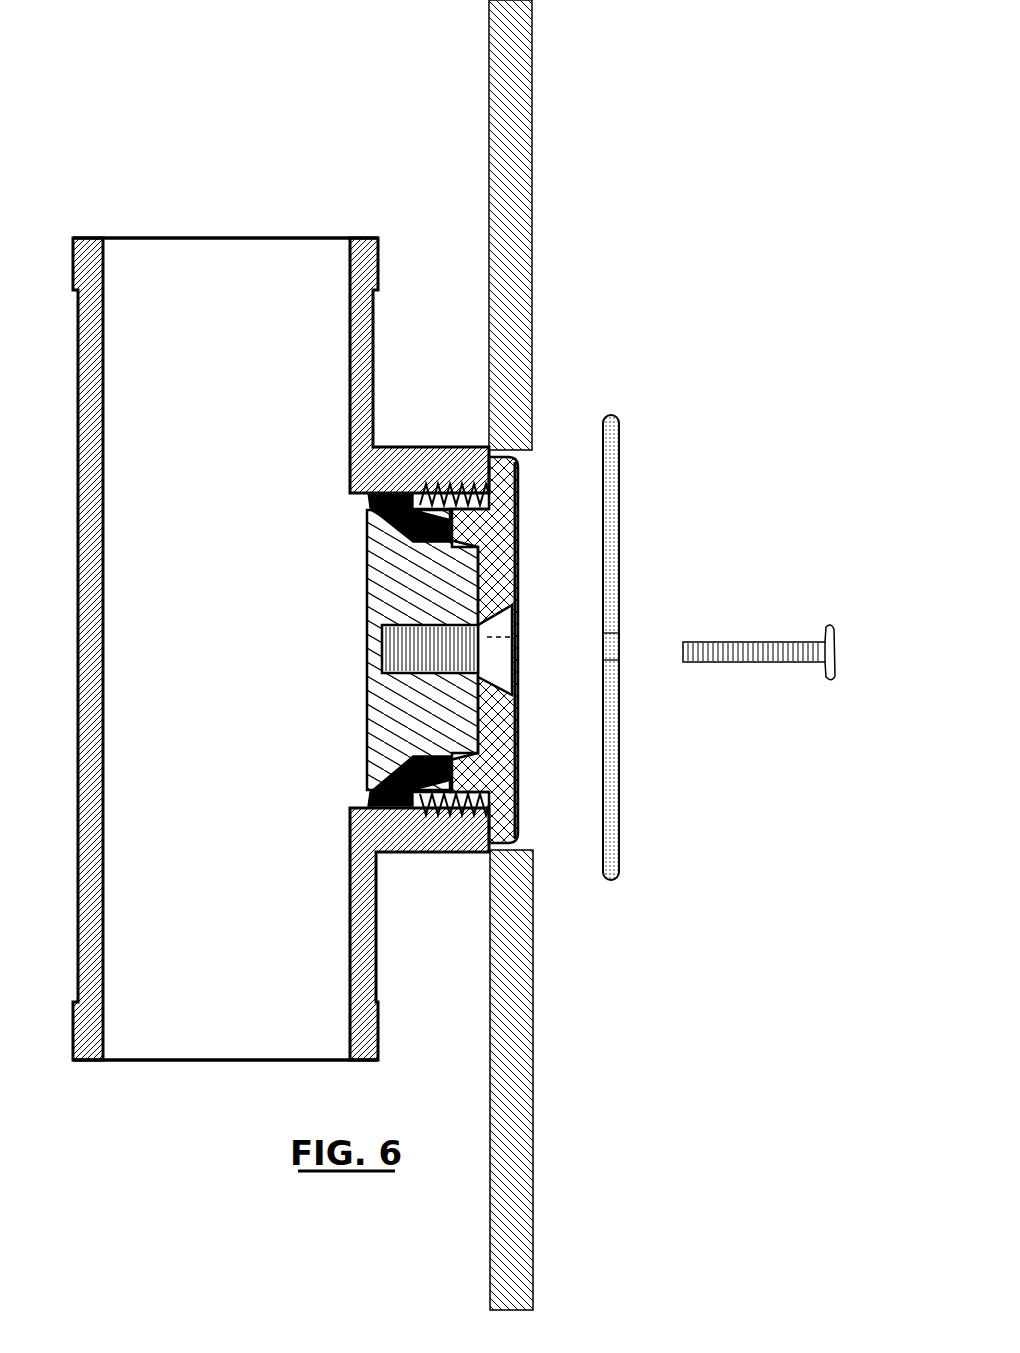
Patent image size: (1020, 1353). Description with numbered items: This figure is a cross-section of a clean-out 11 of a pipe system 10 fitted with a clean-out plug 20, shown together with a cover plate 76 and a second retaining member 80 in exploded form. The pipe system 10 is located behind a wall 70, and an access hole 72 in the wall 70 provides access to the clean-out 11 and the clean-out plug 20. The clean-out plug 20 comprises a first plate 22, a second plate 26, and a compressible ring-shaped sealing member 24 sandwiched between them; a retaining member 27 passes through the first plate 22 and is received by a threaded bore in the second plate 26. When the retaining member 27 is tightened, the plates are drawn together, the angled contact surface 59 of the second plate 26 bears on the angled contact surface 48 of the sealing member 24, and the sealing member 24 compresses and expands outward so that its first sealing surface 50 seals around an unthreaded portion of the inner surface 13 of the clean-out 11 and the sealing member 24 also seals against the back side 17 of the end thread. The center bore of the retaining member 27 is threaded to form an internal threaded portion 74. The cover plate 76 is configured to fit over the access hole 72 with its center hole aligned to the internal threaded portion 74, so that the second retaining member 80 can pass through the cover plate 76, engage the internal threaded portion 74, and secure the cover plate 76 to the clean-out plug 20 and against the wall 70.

The pipe system 10 is at (322, 587).
The clean-out 11 is at (322, 587).
The inner surface 13 is at (352, 487).
The back side of the end thread 17 is at (468, 447).
The clean-out plug 20 is at (563, 690).
The first plate 22 is at (500, 730).
The sealing member 24 is at (367, 797).
The second plate 26 is at (399, 650).
The retaining member 27 is at (487, 660).
The angled contact surface 48 is at (331, 665).
The first sealing surface 50 is at (418, 447).
The angled contact surface 59 is at (363, 725).
The wall 70 is at (515, 222).
The access hole 72 is at (537, 833).
The internal threaded portion 74 is at (507, 645).
The cover plate 76 is at (613, 490).
The second retaining member 80 is at (765, 650).